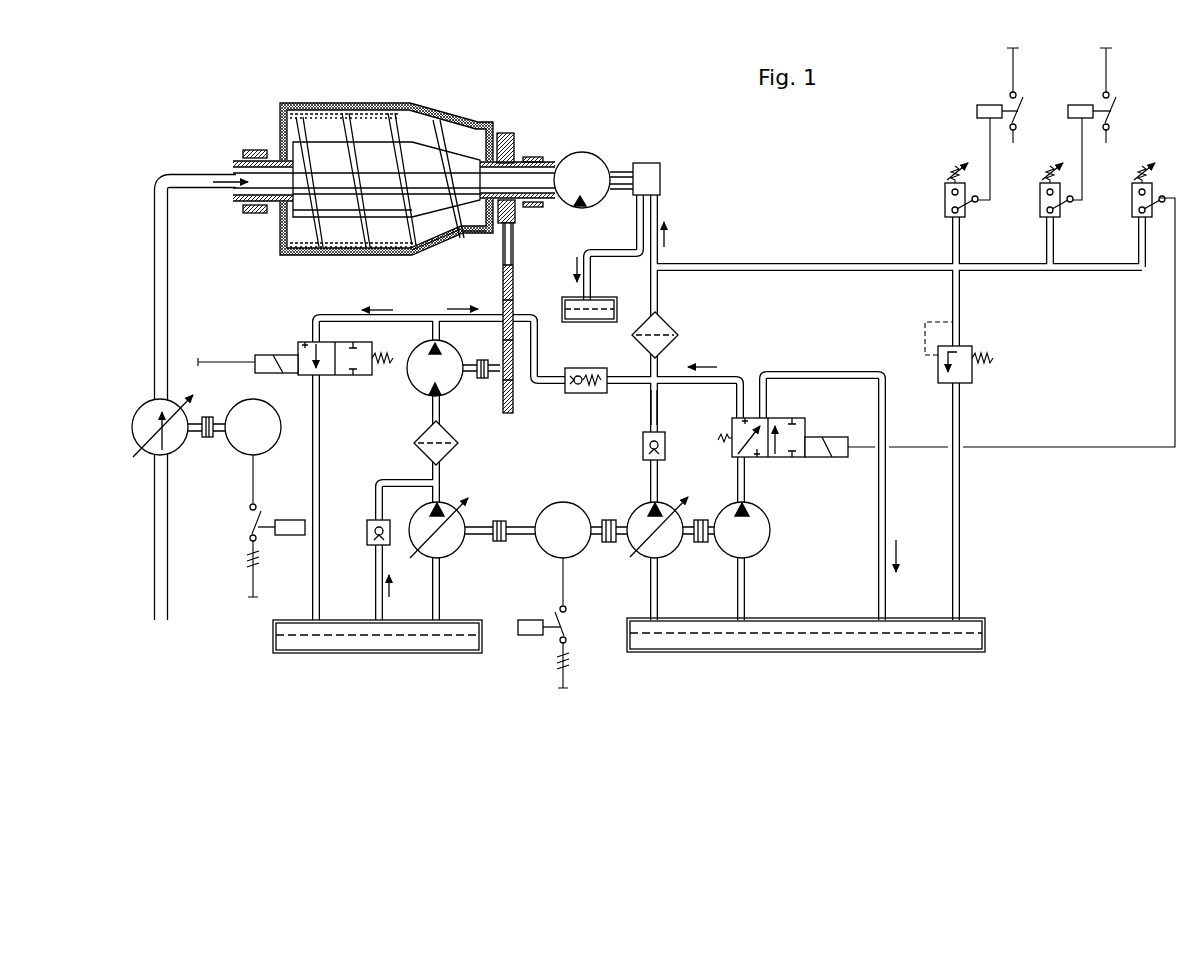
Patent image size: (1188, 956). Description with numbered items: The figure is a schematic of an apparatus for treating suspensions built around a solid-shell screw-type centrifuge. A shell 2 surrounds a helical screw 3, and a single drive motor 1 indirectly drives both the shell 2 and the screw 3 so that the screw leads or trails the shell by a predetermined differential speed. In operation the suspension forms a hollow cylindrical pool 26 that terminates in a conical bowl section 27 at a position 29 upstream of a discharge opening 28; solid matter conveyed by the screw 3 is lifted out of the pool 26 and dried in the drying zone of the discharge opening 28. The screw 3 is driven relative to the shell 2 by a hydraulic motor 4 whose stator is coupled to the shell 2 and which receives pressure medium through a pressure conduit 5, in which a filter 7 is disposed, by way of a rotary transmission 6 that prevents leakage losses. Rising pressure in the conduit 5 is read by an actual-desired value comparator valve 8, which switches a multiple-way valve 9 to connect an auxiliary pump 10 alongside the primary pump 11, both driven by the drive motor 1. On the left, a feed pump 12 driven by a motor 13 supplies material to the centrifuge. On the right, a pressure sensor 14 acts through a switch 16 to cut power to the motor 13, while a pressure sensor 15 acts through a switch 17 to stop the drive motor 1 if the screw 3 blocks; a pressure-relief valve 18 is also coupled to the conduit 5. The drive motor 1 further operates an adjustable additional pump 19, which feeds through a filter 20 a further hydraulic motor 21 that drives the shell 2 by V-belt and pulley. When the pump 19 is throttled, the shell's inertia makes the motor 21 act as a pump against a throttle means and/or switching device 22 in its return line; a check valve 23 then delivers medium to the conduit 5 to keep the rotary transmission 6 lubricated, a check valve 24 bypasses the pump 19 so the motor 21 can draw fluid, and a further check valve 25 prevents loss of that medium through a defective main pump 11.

The drive motor 1 is at (570, 502).
The shell 2 is at (330, 101).
The helical screw 3 is at (338, 213).
The hydraulic motor 4 is at (585, 162).
The pressure conduit 5 is at (650, 410).
The rotary transmission 6 is at (660, 178).
The filter 7 is at (665, 330).
The actual-desired value comparator valve 8 is at (1127, 214).
The multiple-way valve 9 is at (788, 423).
The auxiliary pump 10 is at (770, 530).
The primary pump 11 is at (670, 543).
The feed pump 12 is at (150, 407).
The motor 13 is at (267, 445).
The pressure sensor 14 is at (1035, 214).
The pressure sensor 15 is at (938, 214).
The switch 16 is at (246, 524).
The switch 17 is at (570, 624).
The pressure-relief valve 18 is at (982, 344).
The additional pump 19 is at (452, 548).
The filter 20 is at (448, 452).
The further hydraulic motor 21 is at (453, 388).
The throttle means and/or switching device 22 is at (305, 344).
The check valve 23 is at (575, 394).
The check valve 24 is at (367, 520).
The further check valve 25 is at (668, 452).
The hollow cylindrical pool 26 is at (385, 256).
The conical bowl section 27 is at (463, 242).
The discharge opening 28 is at (477, 240).
The position in front of discharge opening 29 is at (440, 252).